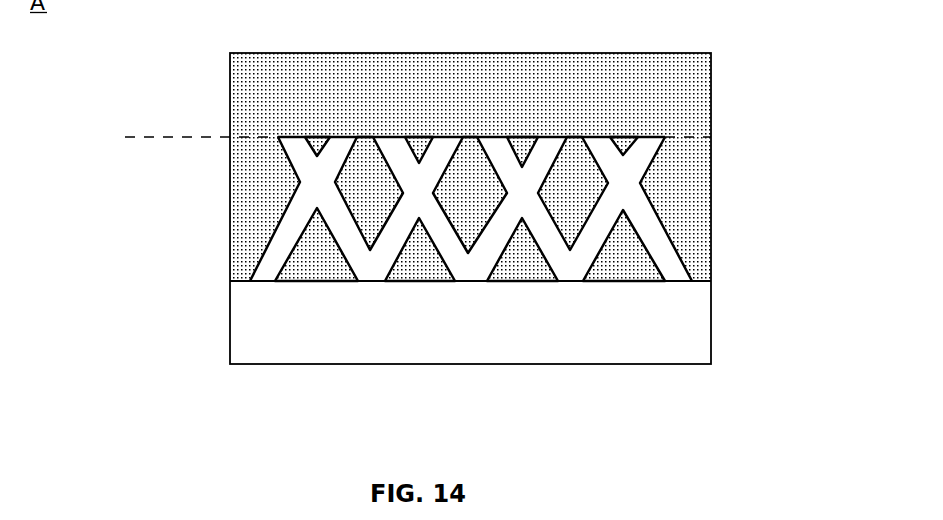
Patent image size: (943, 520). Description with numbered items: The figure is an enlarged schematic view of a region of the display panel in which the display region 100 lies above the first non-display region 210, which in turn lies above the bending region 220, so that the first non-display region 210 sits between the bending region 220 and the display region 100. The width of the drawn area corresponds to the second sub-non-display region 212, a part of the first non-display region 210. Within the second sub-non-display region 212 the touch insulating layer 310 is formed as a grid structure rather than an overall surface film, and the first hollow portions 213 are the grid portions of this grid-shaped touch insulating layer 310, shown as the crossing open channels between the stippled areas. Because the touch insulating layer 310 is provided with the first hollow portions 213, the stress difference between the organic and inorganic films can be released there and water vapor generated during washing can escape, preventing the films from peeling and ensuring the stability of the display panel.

The display region 100 is at (230, 53).
The first non-display region 210 is at (230, 281).
The bending region 220 is at (230, 364).
The second sub-non-display region 212 is at (231, 364).
The touch insulating layer 310 is at (662, 99).
The first hollow portions 213 is at (660, 242).